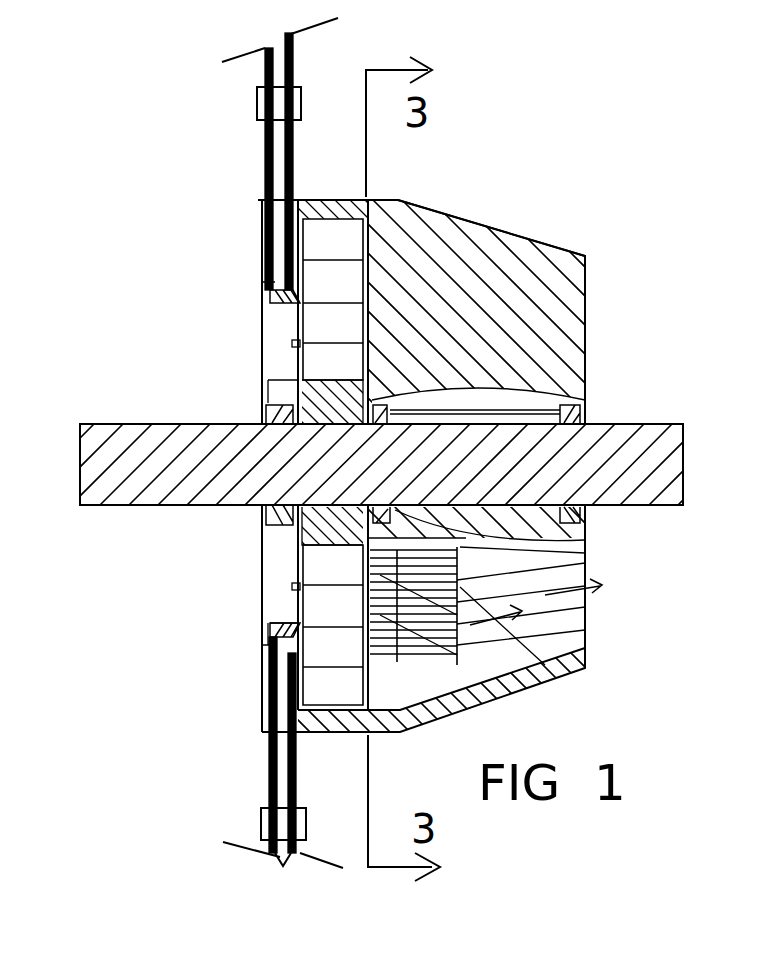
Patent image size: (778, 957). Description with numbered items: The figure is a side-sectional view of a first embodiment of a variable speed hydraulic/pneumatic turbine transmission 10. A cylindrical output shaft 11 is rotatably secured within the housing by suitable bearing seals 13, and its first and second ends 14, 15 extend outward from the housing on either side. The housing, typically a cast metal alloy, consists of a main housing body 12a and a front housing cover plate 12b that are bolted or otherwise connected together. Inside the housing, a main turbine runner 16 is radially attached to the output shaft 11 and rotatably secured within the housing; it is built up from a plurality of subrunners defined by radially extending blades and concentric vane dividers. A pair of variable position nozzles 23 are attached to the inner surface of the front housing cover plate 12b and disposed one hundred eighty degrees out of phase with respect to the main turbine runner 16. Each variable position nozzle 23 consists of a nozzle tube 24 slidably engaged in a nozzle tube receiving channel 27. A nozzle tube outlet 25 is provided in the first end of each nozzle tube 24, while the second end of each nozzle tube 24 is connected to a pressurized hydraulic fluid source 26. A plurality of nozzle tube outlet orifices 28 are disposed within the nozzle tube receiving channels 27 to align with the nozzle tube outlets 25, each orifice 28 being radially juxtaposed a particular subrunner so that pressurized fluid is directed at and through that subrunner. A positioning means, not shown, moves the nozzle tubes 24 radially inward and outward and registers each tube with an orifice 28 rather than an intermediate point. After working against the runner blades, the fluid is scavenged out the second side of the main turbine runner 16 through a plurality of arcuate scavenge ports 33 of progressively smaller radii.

The variable speed hydraulic/pneumatic turbine transmission 10 is at (182, 141).
The output shaft 11 is at (105, 432).
The main housing body 12a is at (528, 243).
The front housing cover plate 12b is at (263, 393).
The bearing seals 13 is at (265, 414).
The first end of output shaft 14 is at (88, 470).
The second end of output shaft 15 is at (668, 472).
The main turbine runner 16 is at (378, 733).
The variable position nozzle 23 is at (275, 313).
The nozzle tube 24 is at (265, 160).
The nozzle tube outlet 25 is at (268, 282).
The pressurized hydraulic fluid source 26 is at (285, 60).
The nozzle tube receiving channel 27 is at (293, 336).
The nozzle tube outlet orifice 28 is at (297, 362).
The arcuate scavenge ports 33 is at (535, 670).